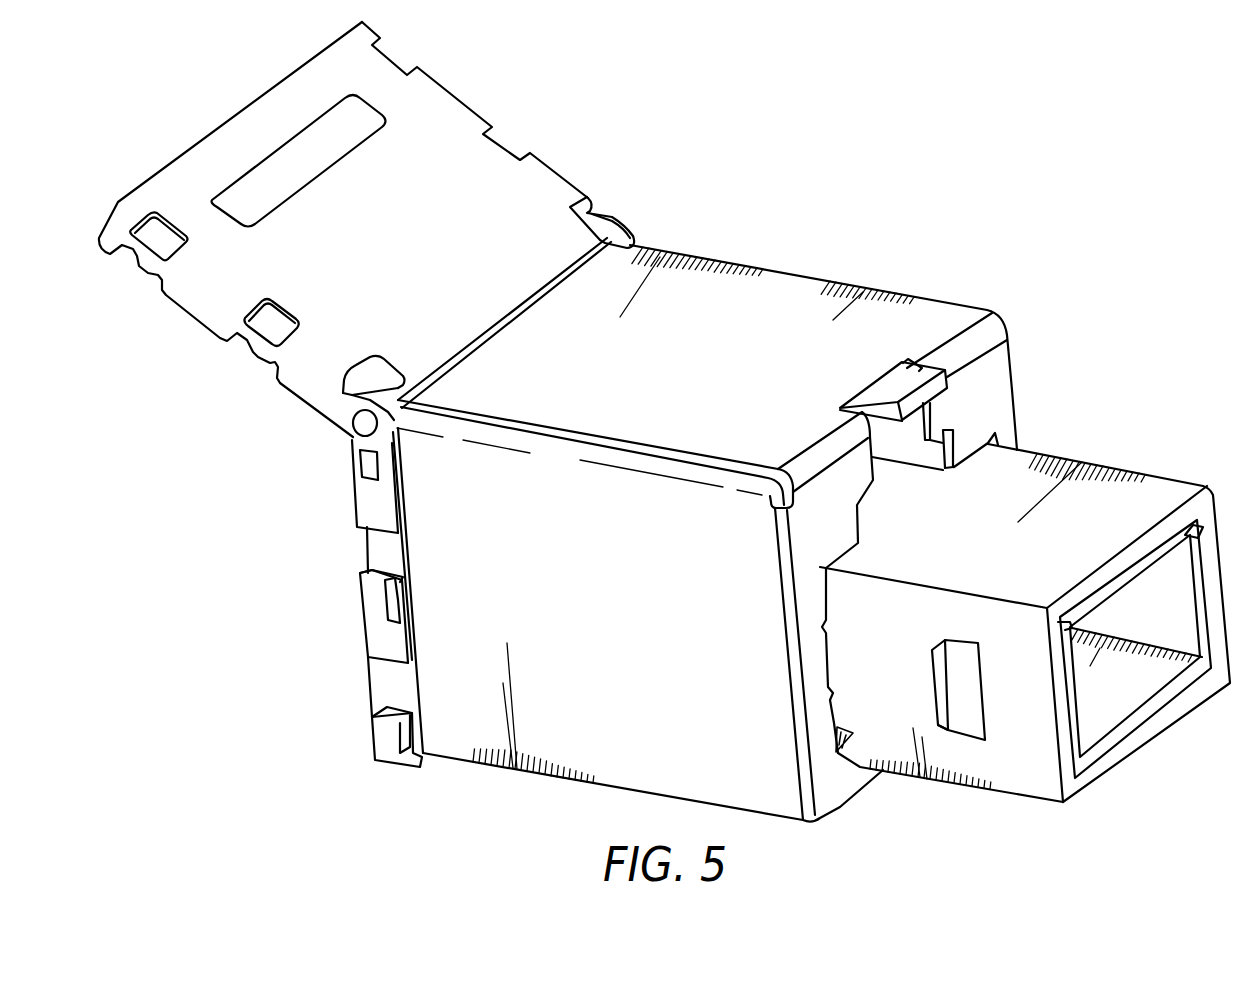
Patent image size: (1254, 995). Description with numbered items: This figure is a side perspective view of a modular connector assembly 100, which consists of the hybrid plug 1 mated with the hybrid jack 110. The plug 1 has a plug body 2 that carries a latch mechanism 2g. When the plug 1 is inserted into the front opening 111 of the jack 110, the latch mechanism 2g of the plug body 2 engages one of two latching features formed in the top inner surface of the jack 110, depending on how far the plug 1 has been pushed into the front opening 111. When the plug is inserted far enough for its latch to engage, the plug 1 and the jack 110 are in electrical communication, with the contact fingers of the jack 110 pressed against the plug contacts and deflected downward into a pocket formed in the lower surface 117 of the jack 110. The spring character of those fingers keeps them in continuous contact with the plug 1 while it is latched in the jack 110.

The modular connector assembly 100 is at (1000, 244).
The hybrid RJ-45 jack 110 is at (775, 290).
The lower surface 117 is at (607, 788).
The latch mechanism 2g is at (902, 390).
The hybrid RJ-45 plug 1 is at (1097, 463).
The plug body 2 is at (1035, 784).
The front opening 111 is at (856, 714).